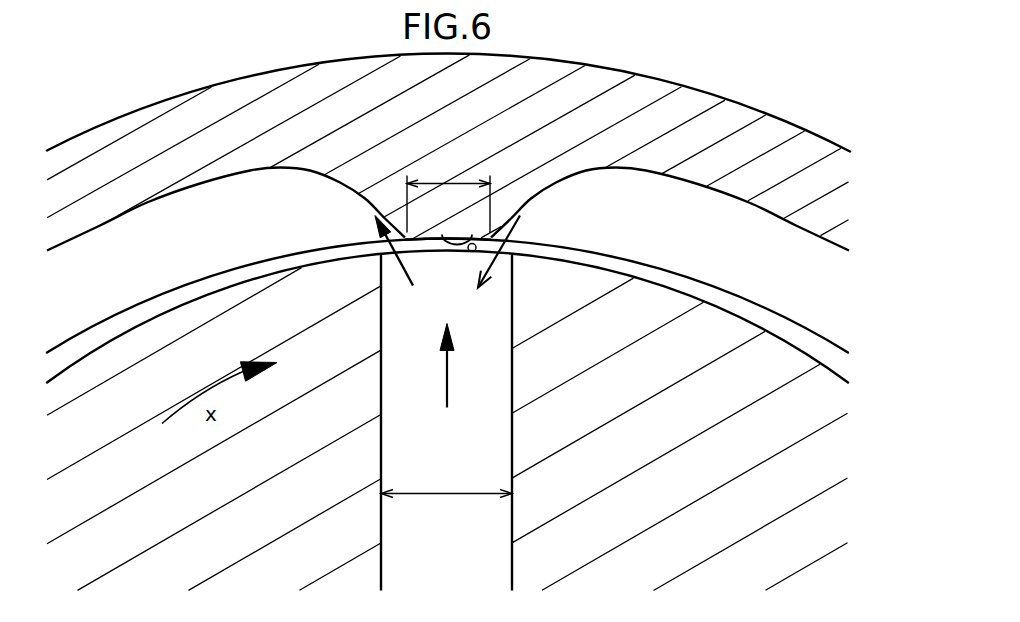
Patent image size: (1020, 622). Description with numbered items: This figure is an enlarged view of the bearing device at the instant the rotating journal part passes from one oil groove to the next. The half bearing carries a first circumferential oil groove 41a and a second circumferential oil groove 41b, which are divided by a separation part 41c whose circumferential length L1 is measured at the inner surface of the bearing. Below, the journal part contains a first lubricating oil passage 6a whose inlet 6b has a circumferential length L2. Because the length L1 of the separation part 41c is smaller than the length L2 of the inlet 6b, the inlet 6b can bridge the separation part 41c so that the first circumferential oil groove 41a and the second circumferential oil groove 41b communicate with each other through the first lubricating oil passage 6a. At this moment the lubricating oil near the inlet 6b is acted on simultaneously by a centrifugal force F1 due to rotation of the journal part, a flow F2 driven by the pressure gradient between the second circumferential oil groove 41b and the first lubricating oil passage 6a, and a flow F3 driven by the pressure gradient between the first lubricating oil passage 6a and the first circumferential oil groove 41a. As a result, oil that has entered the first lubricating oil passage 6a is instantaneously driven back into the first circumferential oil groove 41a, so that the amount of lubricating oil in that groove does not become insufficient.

The first circumferential oil groove 41a is at (187, 249).
The second circumferential oil groove 41b is at (754, 251).
The separation part 41c is at (492, 232).
The first lubricating oil passage 6a is at (460, 549).
The inlet 6b is at (476, 252).
The centrifugal force F1 is at (434, 366).
The flow F2 is at (522, 218).
The flow F3 is at (395, 254).
The length in the circumferential direction of the separation part L1 is at (448, 196).
The length in the circumferential direction of the inlet L2 is at (446, 482).